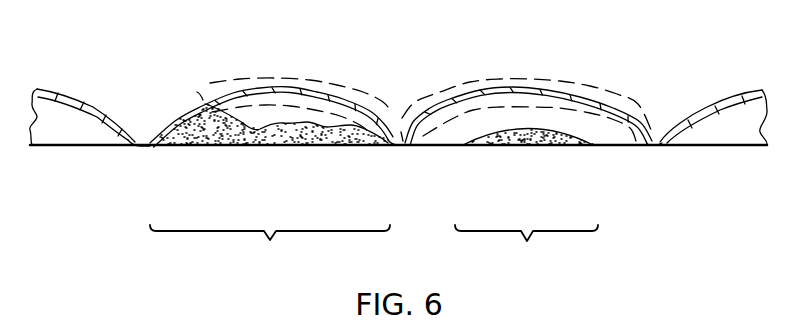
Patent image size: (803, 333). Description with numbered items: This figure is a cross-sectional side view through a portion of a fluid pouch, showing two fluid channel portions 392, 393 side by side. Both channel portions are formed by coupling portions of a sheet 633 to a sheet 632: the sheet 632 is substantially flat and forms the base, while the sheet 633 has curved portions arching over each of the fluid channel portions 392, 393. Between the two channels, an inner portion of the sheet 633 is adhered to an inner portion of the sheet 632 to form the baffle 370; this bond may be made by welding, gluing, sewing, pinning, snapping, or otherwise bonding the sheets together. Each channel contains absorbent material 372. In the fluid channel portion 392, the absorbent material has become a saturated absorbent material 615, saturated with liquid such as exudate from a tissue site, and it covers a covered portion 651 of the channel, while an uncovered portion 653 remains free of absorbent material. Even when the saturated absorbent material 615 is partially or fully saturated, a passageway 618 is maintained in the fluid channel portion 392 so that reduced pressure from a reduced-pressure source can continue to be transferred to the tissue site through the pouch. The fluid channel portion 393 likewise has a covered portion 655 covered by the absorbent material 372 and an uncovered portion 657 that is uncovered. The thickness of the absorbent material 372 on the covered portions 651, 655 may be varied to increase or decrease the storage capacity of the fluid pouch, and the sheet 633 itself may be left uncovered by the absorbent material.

The saturated absorbent material 615 is at (183, 107).
The uncovered portion 653 is at (247, 76).
The fluid channel portion 392 is at (277, 112).
The passageway 618 is at (233, 147).
The baffle 370 is at (401, 147).
The covered portion 651 is at (270, 248).
The uncovered portion 657 is at (478, 77).
The sheet 633 is at (605, 102).
The fluid channel portion 393 is at (443, 137).
The absorbent material 372 is at (520, 138).
The sheet 632 is at (612, 147).
The covered portion 655 is at (526, 249).